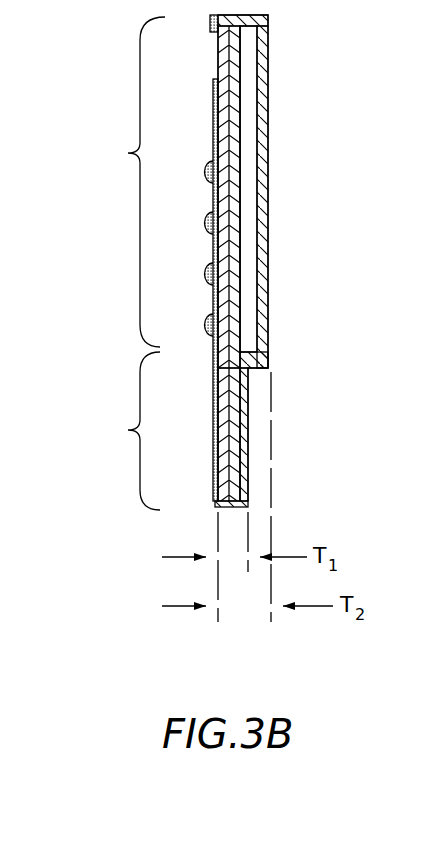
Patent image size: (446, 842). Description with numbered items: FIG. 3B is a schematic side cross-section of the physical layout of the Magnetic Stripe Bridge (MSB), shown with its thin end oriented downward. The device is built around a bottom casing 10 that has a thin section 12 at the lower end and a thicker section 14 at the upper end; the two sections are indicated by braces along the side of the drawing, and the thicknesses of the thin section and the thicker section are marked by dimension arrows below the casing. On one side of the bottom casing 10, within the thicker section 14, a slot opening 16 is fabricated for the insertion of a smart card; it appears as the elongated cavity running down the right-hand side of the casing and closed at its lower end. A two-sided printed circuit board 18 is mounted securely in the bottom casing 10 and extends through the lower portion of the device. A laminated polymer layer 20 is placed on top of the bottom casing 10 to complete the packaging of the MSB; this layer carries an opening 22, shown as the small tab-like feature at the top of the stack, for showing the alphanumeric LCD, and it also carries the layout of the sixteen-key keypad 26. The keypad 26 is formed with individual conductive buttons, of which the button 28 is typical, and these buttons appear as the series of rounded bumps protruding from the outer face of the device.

The bottom casing 10 is at (242, 261).
The thin section 12 is at (125, 431).
The thicker section 14 is at (127, 182).
The slot opening 16 is at (260, 233).
The two-sided printed circuit board 18 is at (230, 410).
The laminated polymer layer 20 is at (240, 103).
The opening 22 is at (208, 52).
The keypad 26 is at (208, 249).
The conductive button 28 is at (201, 179).